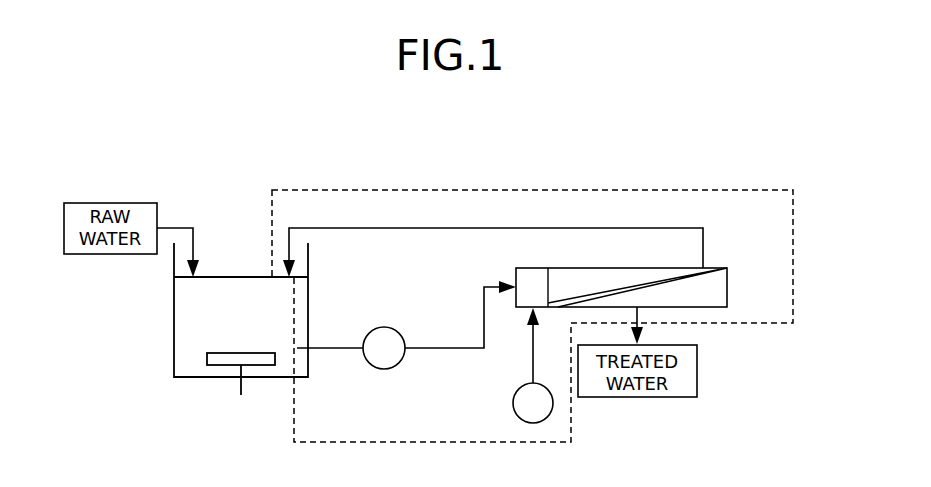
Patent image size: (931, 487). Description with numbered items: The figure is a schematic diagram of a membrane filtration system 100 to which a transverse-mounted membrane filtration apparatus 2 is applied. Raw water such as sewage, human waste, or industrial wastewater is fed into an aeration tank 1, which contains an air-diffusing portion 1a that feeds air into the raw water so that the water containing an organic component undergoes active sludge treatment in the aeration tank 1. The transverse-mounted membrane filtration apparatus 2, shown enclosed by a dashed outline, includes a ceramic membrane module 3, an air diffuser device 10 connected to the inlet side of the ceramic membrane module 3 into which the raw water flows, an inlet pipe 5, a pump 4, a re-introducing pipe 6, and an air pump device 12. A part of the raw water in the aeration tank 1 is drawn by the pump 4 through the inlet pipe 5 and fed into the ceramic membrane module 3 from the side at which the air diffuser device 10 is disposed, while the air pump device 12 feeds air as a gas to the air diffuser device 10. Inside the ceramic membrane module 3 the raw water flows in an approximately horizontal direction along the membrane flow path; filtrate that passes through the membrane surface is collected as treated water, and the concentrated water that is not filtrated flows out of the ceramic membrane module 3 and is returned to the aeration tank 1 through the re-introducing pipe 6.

The membrane filtration system 100 is at (403, 155).
The aeration tank 1 is at (172, 299).
The air-diffusing portion 1a is at (254, 353).
The transverse-mounted membrane filtration apparatus 2 is at (694, 190).
The ceramic membrane module 3 is at (727, 285).
The pump 4 is at (383, 370).
The inlet pipe 5 is at (455, 350).
The re-introducing pipe 6 is at (703, 240).
The air diffuser device 10 is at (514, 278).
The air pump device 12 is at (514, 410).